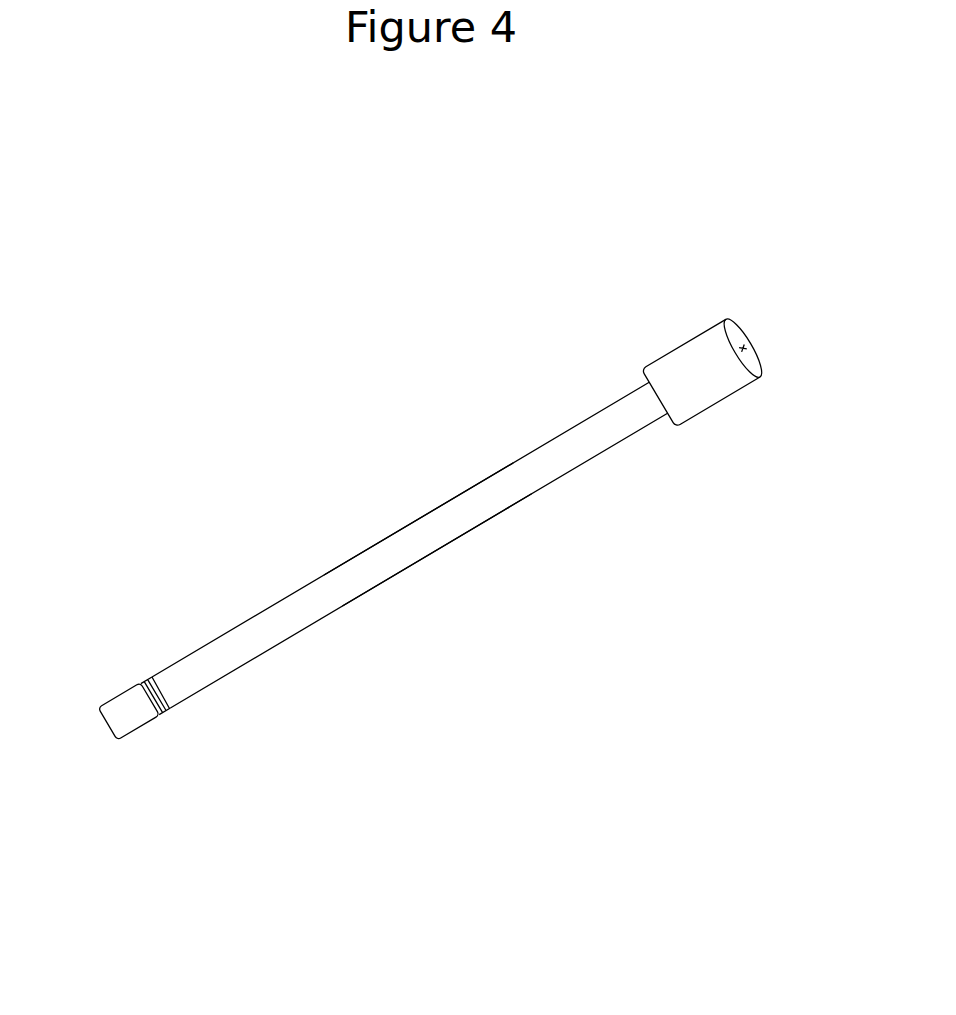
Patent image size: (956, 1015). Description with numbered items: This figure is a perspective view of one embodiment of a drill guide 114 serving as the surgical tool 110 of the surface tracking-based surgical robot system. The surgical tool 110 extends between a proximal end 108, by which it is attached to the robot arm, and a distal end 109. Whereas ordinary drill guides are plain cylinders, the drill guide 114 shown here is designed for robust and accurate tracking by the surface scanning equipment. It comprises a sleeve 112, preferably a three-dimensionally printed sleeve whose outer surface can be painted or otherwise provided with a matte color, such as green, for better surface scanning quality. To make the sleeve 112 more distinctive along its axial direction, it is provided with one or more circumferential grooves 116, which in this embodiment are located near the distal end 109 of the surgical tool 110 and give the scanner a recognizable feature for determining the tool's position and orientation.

The proximal end 108 is at (730, 322).
The distal end 109 is at (105, 730).
The surgical tool 110 is at (478, 505).
The sleeve 112 is at (345, 560).
The drill guide 114 is at (532, 455).
The circumferential grooves 116 is at (162, 710).